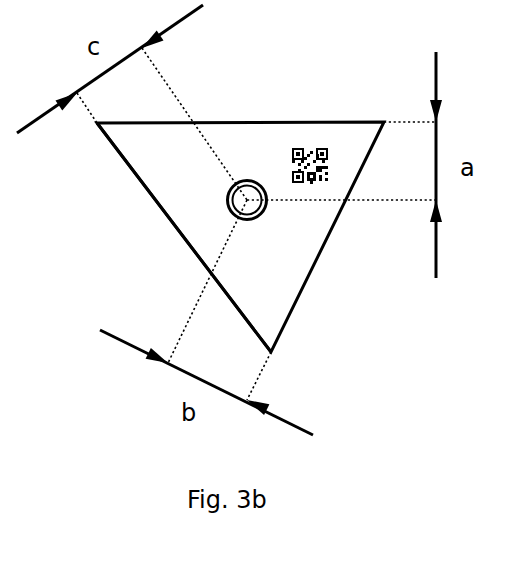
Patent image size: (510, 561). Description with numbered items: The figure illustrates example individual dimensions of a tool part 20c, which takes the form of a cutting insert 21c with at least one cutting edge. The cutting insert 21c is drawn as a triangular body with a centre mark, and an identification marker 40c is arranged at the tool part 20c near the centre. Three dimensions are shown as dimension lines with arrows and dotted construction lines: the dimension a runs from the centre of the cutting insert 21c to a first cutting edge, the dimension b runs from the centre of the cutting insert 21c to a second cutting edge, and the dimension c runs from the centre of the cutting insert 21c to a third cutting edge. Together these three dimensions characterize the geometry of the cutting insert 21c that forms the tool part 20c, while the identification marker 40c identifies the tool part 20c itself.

The tool part 20c is at (125, 192).
The cutting insert 21c is at (162, 248).
The identification marker 40c is at (316, 136).